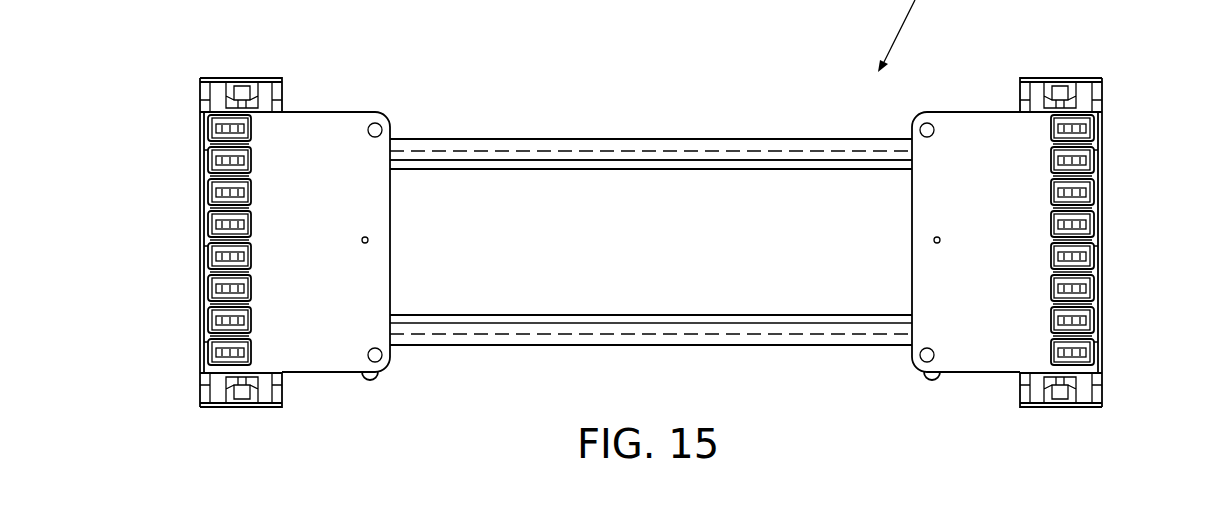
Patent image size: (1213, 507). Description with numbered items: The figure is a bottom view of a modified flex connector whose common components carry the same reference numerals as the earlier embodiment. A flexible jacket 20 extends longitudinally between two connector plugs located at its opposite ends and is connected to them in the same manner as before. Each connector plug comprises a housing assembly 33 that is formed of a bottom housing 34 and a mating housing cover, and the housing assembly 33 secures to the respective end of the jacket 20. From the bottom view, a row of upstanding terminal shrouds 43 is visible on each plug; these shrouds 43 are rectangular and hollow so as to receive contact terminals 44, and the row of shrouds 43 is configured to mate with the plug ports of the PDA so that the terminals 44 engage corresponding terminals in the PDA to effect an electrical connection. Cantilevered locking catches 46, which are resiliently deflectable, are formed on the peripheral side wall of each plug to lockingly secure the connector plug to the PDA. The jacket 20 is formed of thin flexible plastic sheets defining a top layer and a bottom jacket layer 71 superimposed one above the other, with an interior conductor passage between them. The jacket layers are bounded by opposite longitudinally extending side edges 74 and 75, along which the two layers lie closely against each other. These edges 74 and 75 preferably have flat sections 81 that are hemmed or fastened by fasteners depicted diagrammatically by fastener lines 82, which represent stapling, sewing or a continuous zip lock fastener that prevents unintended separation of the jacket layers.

The jacket 20 is at (698, 158).
The housing assembly 33 is at (340, 106).
The bottom housing 34 is at (325, 345).
The terminal shrouds 43 is at (1093, 128).
The contact terminals 44 is at (1098, 150).
The locking catches 46 is at (206, 79).
The bottom jacket layer 71 is at (655, 240).
The side edge 74 is at (774, 139).
The side edge 75 is at (760, 345).
The flat sections 81 is at (477, 152).
The fastener lines 82 is at (595, 148).